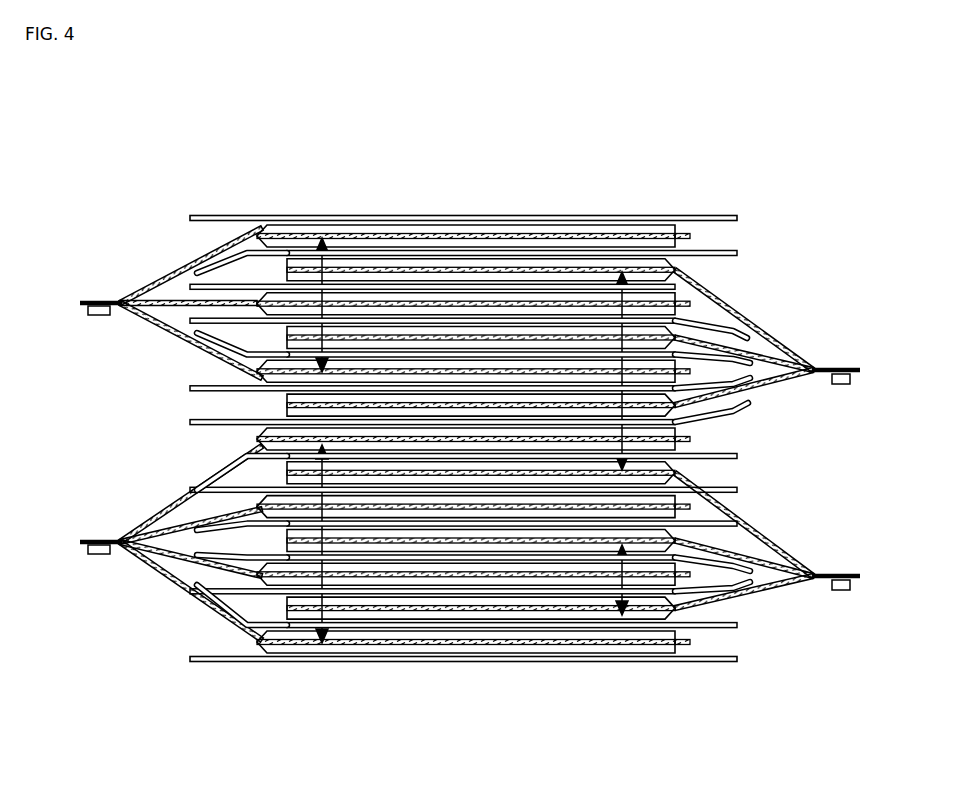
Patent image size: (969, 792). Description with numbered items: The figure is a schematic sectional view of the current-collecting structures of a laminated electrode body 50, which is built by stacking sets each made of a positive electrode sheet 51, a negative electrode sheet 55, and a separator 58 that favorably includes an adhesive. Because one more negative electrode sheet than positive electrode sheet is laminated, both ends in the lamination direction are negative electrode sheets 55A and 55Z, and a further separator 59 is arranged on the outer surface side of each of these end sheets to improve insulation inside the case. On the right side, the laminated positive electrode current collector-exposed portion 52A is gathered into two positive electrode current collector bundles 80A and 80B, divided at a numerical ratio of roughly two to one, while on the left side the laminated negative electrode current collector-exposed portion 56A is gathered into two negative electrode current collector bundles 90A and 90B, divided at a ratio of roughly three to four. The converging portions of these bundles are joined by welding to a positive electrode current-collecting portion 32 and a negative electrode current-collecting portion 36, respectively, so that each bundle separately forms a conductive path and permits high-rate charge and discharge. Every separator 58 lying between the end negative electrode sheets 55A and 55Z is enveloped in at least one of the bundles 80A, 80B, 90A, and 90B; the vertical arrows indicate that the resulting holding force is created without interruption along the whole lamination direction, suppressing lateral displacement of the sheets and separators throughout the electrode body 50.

The laminated electrode body 50 is at (764, 137).
The separator 59 is at (690, 214).
The positive electrode sheet 51 is at (686, 268).
The negative electrode sheet 55A is at (696, 236).
The negative electrode sheet 55 is at (698, 506).
The negative electrode sheet 55Z is at (698, 645).
The negative electrode current collector-exposed portion 56A is at (228, 250).
The separator 58 is at (192, 268).
The negative electrode current collector bundle 90A is at (148, 292).
The negative electrode current collector bundle 90B is at (148, 532).
The negative electrode current-collecting portion 36 is at (99, 316).
The positive electrode current collector-exposed portion 52A is at (782, 343).
The positive electrode current collector bundle 80A is at (825, 365).
The positive electrode current collector bundle 80B is at (825, 571).
The positive electrode current-collecting portion 32 is at (841, 385).